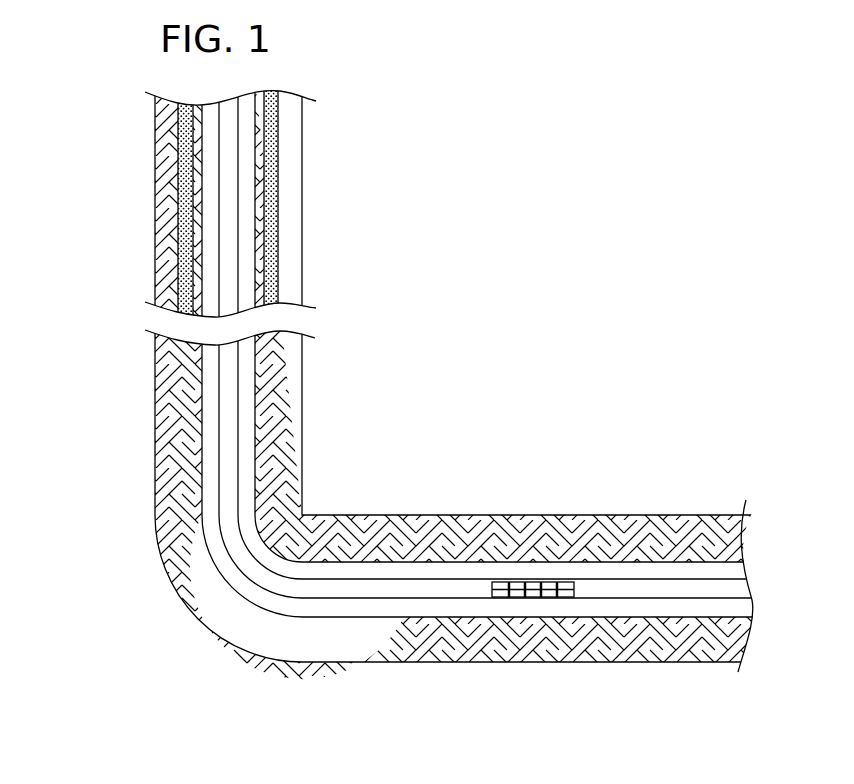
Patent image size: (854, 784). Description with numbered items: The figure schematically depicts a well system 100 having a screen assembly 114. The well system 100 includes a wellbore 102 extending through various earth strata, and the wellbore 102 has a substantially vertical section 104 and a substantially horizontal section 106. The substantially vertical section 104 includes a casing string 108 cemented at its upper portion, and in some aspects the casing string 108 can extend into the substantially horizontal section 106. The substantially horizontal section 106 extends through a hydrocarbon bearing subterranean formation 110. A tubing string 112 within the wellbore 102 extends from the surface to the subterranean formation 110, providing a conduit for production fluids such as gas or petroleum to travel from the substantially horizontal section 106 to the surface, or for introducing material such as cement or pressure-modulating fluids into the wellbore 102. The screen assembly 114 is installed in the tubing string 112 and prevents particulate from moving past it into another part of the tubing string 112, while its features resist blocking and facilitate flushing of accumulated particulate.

The well system 100 is at (124, 152).
The wellbore 102 is at (270, 432).
The substantially vertical section 104 is at (265, 382).
The substantially horizontal section 106 is at (604, 550).
The casing string 108 is at (272, 203).
The subterranean formation 110 is at (533, 372).
The tubing string 112 is at (238, 473).
The screen assembly 114 is at (517, 583).